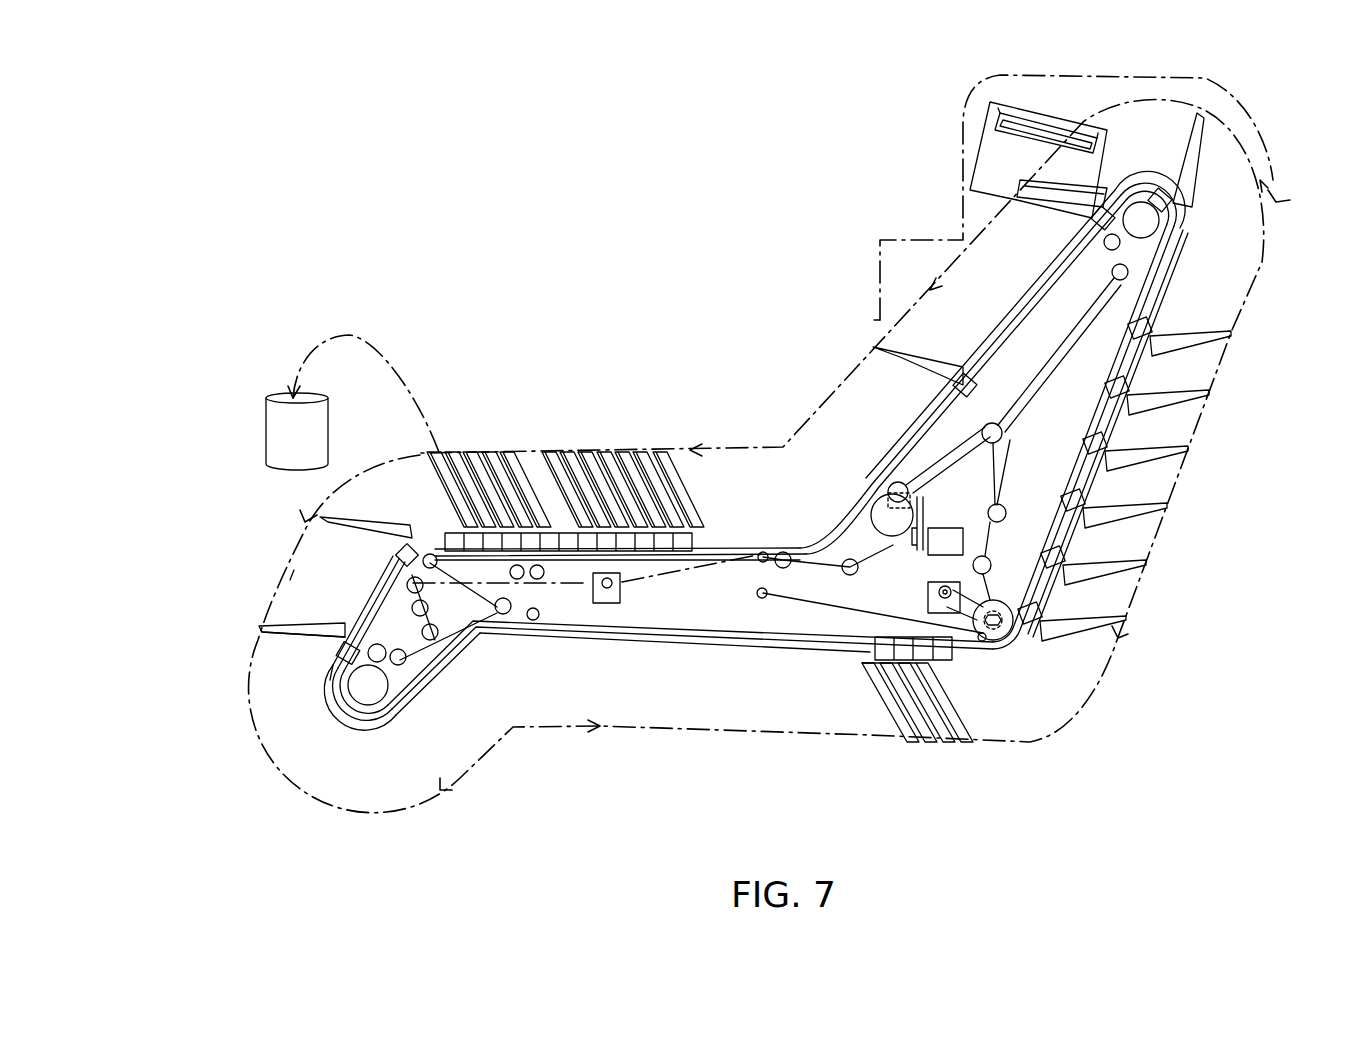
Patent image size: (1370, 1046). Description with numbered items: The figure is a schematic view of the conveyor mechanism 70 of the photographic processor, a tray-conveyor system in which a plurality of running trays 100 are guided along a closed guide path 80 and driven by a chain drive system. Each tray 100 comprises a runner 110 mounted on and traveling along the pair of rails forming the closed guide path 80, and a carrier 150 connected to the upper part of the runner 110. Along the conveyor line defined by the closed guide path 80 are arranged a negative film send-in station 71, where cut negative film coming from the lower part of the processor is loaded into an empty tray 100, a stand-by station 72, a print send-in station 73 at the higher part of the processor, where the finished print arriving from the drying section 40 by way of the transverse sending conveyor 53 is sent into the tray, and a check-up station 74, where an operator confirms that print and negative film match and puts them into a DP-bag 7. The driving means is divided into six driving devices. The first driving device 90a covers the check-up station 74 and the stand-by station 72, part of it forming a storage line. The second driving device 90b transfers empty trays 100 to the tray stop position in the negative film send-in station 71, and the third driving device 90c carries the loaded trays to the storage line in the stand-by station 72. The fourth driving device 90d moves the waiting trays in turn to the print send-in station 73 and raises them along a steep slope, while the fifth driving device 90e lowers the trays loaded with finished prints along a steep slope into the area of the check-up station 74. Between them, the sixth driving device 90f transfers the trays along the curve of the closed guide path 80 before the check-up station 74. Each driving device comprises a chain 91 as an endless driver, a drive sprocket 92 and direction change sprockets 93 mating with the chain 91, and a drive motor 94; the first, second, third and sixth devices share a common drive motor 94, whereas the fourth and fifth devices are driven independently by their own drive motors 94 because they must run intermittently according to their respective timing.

The DP-bag 7 is at (318, 445).
The drying section 40 is at (880, 265).
The transverse sending conveyor 53 is at (1010, 122).
The conveyor mechanism 70 is at (683, 248).
The negative film send-in station 71 is at (290, 578).
The stand-by station 72 is at (880, 735).
The print send-in station 73 is at (1047, 172).
The check-up station 74 is at (553, 447).
The closed guide path 80 is at (1165, 290).
The first driving device 90a is at (720, 540).
The second driving device 90b is at (385, 598).
The third driving device 90c is at (420, 650).
The fourth driving device 90d is at (1040, 585).
The fifth driving device 90e is at (1037, 302).
The sixth driving device 90f is at (822, 450).
The chain 91 is at (455, 640).
The drive sprocket 92 is at (515, 565).
The direction change sprocket 93 is at (1148, 222).
The drive motor 94 is at (622, 590).
The tray 100 is at (462, 465).
The runner 110 is at (337, 683).
The carrier 150 is at (295, 622).